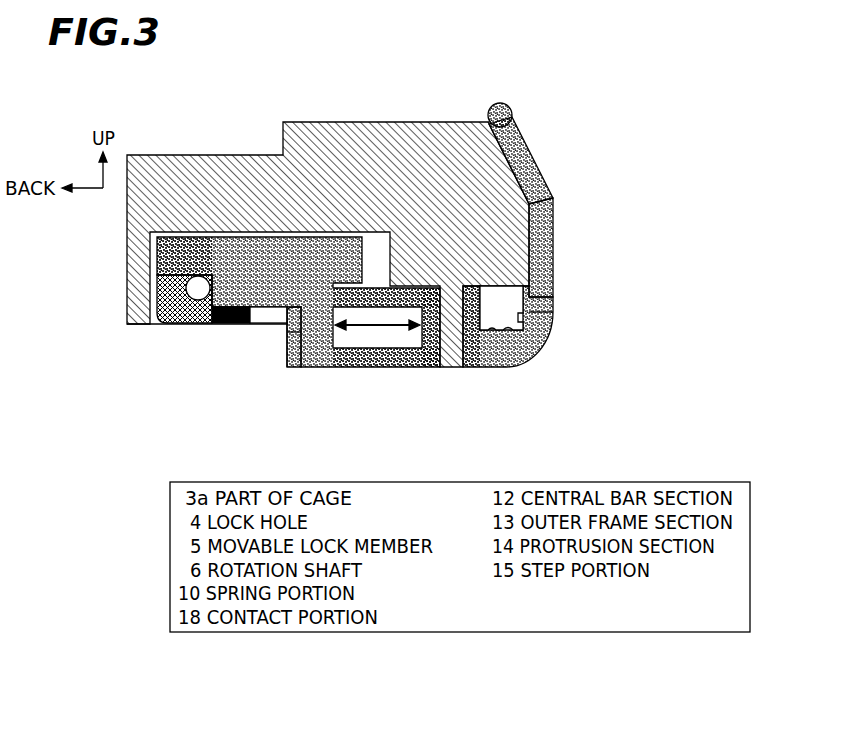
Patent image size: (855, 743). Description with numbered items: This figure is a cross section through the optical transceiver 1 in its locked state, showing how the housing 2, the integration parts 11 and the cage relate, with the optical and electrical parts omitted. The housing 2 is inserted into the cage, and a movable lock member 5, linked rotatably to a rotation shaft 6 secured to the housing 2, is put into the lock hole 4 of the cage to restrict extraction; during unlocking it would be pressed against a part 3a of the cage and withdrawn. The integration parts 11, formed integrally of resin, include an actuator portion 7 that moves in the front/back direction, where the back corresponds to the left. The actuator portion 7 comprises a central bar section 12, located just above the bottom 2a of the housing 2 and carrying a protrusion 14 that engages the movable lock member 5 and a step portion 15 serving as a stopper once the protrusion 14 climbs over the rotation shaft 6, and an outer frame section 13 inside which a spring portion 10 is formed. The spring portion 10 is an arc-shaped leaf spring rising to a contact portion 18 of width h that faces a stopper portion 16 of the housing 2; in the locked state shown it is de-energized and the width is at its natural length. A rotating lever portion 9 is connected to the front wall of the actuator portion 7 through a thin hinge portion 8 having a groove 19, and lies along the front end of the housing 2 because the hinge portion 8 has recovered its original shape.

The optical transceiver 1 is at (526, 86).
The housing 2 is at (331, 122).
The bottom of housing 2a is at (130, 325).
The part of cage 3a is at (233, 324).
The lock hole 4 is at (213, 330).
The movable lock member 5 is at (165, 324).
The rotation shaft 6 is at (199, 296).
The actuator portion 7 is at (323, 367).
The hinge portion 8 is at (582, 356).
The rotating lever portion 9 is at (654, 200).
The spring portion 10 is at (391, 365).
The integration parts 11 is at (553, 258).
The central bar section 12 is at (299, 266).
The outer frame section 13 is at (395, 365).
The protrusion 14 is at (168, 237).
The step portion 15 is at (217, 283).
The stopper portion 16 is at (460, 367).
The contact portion 18 is at (418, 335).
The groove 19 is at (543, 322).